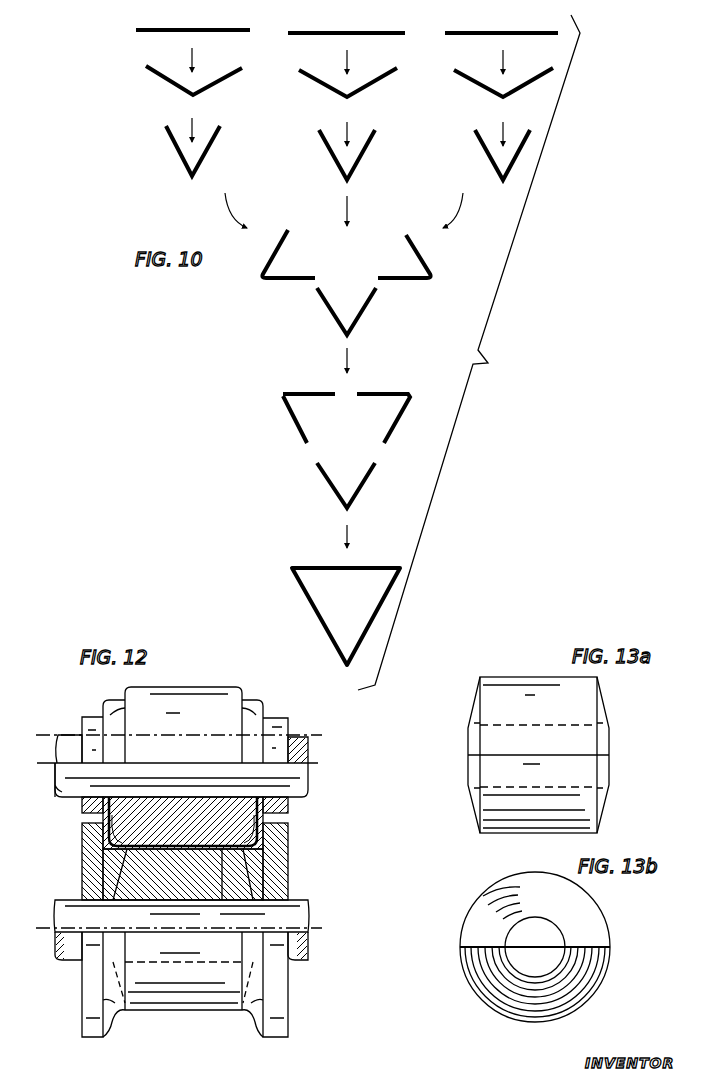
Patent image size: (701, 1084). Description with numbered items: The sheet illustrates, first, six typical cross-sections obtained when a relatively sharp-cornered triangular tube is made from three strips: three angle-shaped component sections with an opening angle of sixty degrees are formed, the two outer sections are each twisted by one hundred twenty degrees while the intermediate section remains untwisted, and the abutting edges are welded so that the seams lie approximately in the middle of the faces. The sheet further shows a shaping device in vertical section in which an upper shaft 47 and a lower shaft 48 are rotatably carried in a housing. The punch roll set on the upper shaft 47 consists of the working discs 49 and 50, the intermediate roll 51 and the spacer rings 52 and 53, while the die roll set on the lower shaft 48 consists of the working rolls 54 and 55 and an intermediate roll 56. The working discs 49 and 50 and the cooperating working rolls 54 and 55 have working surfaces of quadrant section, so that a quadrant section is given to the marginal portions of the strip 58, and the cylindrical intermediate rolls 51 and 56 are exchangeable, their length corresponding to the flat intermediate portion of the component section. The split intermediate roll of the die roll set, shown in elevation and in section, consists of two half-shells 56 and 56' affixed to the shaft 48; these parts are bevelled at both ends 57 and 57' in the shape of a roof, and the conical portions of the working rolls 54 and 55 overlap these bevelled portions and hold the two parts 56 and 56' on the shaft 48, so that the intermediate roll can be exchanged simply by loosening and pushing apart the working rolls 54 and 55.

In FIG. 12, the upper shaft 47 is at (62, 740).
In FIG. 12, the lower shaft 48 is at (62, 917).
In FIG. 12, the working disc 49 is at (113, 698).
In FIG. 12, the working disc 50 is at (256, 700).
In FIG. 12, the intermediate roll 51 is at (215, 697).
In FIG. 12, the spacer ring 52 is at (86, 722).
In FIG. 12, the spacer ring 53 is at (283, 722).
In FIG. 12, the working roll 54 is at (84, 860).
In FIG. 12, the working roll 55 is at (286, 860).
In FIG. 12, the intermediate roll 56 is at (183, 861).
In FIG. 13a, the intermediate roll 56 is at (538, 741).
In FIG. 13b, the intermediate roll 56 is at (521, 947).
In FIG. 13a, the half-shell 56' is at (536, 827).
In FIG. 13a, the bevelled end 57 is at (619, 755).
In FIG. 13b, the bevelled end 57 is at (521, 982).
In FIG. 13a, the bevelled end 57' is at (460, 755).
In FIG. 12, the strip 58 is at (222, 885).